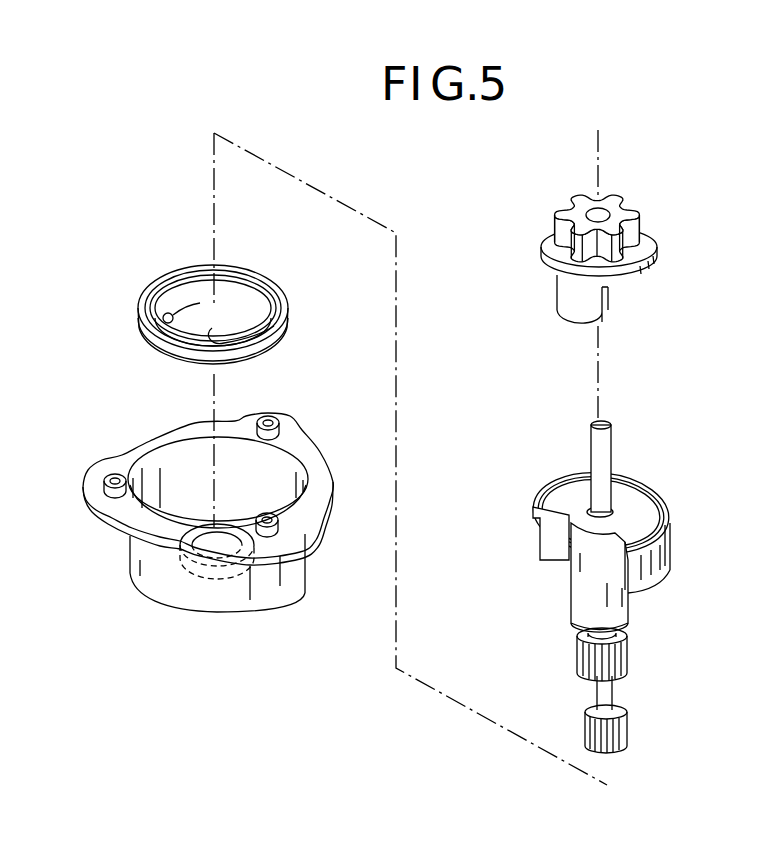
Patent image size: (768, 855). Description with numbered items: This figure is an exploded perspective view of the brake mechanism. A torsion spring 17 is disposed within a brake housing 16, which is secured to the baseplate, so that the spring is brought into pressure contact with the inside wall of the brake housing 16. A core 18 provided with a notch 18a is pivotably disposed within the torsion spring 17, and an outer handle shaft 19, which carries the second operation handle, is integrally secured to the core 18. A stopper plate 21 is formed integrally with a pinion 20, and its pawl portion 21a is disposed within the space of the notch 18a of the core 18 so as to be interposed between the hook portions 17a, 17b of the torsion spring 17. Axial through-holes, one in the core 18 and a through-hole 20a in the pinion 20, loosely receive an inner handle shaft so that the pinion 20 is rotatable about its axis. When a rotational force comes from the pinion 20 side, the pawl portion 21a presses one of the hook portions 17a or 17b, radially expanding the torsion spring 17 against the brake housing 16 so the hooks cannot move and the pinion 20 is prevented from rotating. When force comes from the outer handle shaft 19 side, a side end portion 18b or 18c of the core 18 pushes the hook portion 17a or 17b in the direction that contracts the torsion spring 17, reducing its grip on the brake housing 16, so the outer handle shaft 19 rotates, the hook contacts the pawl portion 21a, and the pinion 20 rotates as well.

The brake housing 16 is at (163, 537).
The torsion spring 17 is at (140, 318).
The hook portion 17a is at (232, 304).
The hook portion 17b is at (195, 302).
The core 18 is at (623, 506).
The notch 18a is at (617, 510).
The side end portion 18b is at (655, 566).
The side end portion 18c is at (546, 543).
The outer handle shaft 19 is at (618, 614).
The pinion 20 is at (607, 194).
The through-hole 20a is at (590, 212).
The stopper plate 21 is at (646, 240).
The pawl portion 21a is at (585, 310).